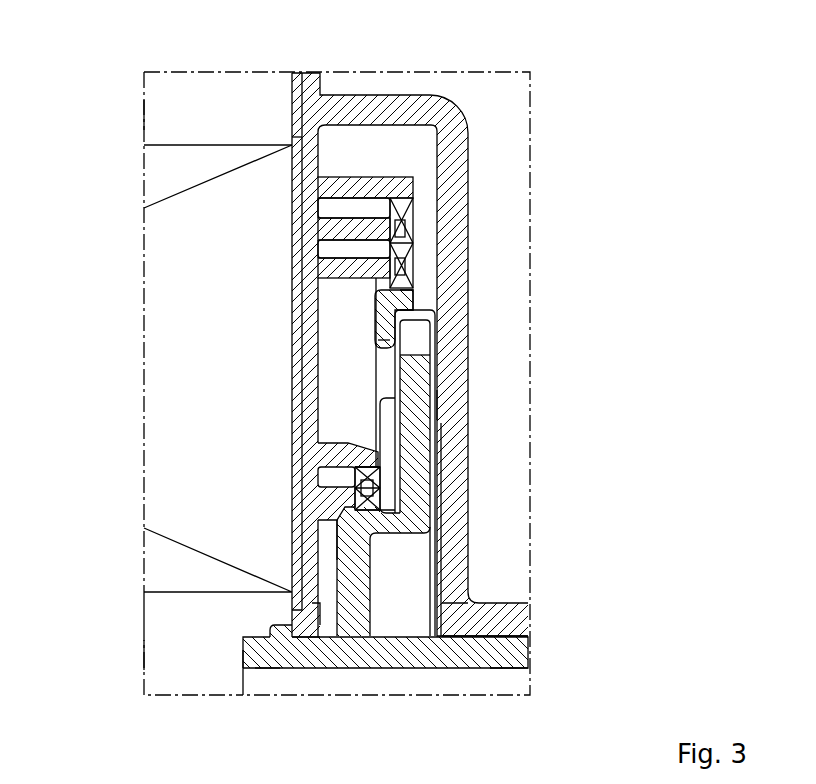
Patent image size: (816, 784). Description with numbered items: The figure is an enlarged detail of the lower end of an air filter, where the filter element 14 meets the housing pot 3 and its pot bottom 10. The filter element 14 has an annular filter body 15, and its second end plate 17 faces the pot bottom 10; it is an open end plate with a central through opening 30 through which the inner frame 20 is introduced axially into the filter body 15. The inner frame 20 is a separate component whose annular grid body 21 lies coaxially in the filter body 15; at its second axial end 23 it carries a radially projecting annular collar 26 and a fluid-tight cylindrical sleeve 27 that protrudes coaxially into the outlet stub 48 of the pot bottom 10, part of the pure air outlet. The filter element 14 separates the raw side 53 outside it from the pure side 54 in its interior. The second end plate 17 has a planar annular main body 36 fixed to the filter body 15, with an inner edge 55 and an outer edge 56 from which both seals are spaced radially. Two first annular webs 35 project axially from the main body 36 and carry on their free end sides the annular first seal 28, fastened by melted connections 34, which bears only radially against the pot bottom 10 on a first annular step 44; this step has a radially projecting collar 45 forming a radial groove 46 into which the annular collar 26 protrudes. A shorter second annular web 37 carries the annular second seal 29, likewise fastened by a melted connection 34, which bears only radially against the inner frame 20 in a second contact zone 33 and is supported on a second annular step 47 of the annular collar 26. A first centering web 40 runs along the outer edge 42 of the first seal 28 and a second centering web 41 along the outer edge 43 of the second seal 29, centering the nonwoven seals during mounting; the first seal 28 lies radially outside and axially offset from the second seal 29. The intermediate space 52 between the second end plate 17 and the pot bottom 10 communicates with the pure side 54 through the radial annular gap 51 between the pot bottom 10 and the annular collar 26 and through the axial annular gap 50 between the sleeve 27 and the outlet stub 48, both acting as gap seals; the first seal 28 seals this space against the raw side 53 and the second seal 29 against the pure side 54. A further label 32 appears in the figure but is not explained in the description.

The housing pot 3 is at (460, 98).
The pot bottom 10 is at (475, 135).
The filter element 14 is at (212, 128).
The filter body 15 is at (162, 350).
The second end plate 17 is at (300, 113).
The inner frame 20 is at (424, 680).
The grid body 21 is at (250, 660).
The second axial end 23 is at (268, 662).
The annular collar 26 is at (368, 603).
The cylindrical sleeve 27 is at (504, 660).
The first seal 28 is at (405, 240).
The second seal 29 is at (380, 480).
The central through opening 30 is at (271, 624).
The shoulder 32 is at (415, 300).
The second contact zone 33 is at (338, 531).
The melted connection 34 is at (413, 220).
The first annular webs 35 is at (352, 230).
The main body 36 is at (309, 418).
The second annular web 37 is at (318, 512).
The first centering web 40 is at (413, 185).
The second centering web 41 is at (398, 453).
The outer edge 42 is at (406, 204).
The outer edge 43 is at (360, 467).
The first annular step 44 is at (376, 292).
The radially projecting collar 45 is at (378, 338).
The radial groove 46 is at (436, 342).
The second annular step 47 is at (400, 581).
The outlet stub 48 is at (497, 608).
The axial annular gap 50 is at (528, 636).
The radial annular gap 51 is at (440, 400).
The intermediate space 52 is at (340, 378).
The raw side 53 is at (183, 128).
The pure side 54 is at (188, 667).
The inner edge 55 is at (315, 628).
The outer edge 56 is at (292, 136).